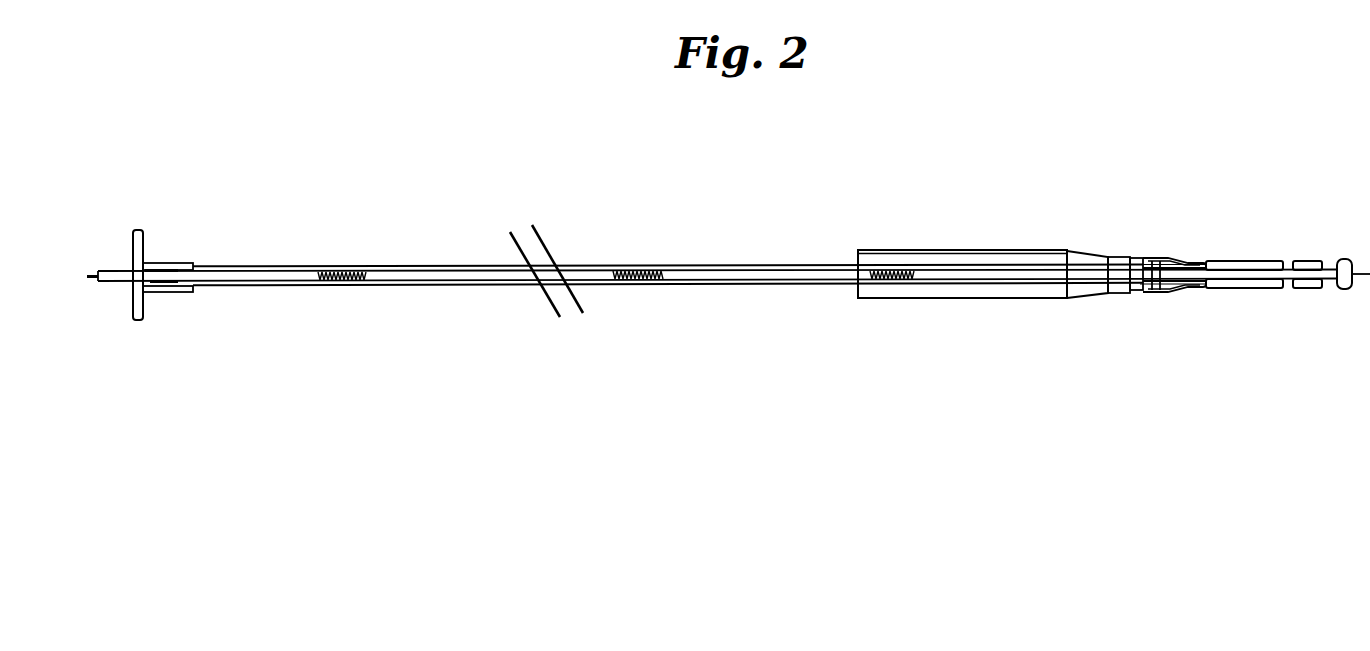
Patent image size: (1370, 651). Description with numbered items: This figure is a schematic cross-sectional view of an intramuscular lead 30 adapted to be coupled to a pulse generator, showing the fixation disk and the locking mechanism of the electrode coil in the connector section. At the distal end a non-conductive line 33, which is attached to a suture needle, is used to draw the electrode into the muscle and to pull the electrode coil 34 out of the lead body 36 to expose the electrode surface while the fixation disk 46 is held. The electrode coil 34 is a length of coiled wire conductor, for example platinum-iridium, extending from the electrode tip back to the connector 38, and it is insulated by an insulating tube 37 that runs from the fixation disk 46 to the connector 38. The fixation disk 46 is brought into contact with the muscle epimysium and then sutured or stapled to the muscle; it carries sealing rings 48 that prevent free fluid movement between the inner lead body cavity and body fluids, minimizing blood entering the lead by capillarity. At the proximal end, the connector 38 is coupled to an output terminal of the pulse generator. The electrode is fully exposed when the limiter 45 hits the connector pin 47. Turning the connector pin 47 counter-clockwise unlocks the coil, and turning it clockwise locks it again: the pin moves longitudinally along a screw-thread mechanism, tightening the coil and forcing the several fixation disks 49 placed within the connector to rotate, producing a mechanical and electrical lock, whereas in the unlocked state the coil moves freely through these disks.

The intramuscular lead 30 is at (643, 210).
The non-conductive line 33 is at (90, 268).
The electrode coil 34 is at (113, 283).
The lead body 36 is at (423, 303).
The insulating tube 37 is at (698, 265).
The connector 38 is at (1132, 297).
The limiter 45 is at (1340, 292).
The fixation disk 46 is at (148, 263).
The connector pin 47 is at (1302, 257).
The sealing rings 48 is at (148, 267).
The fixation disks 49 is at (1152, 290).